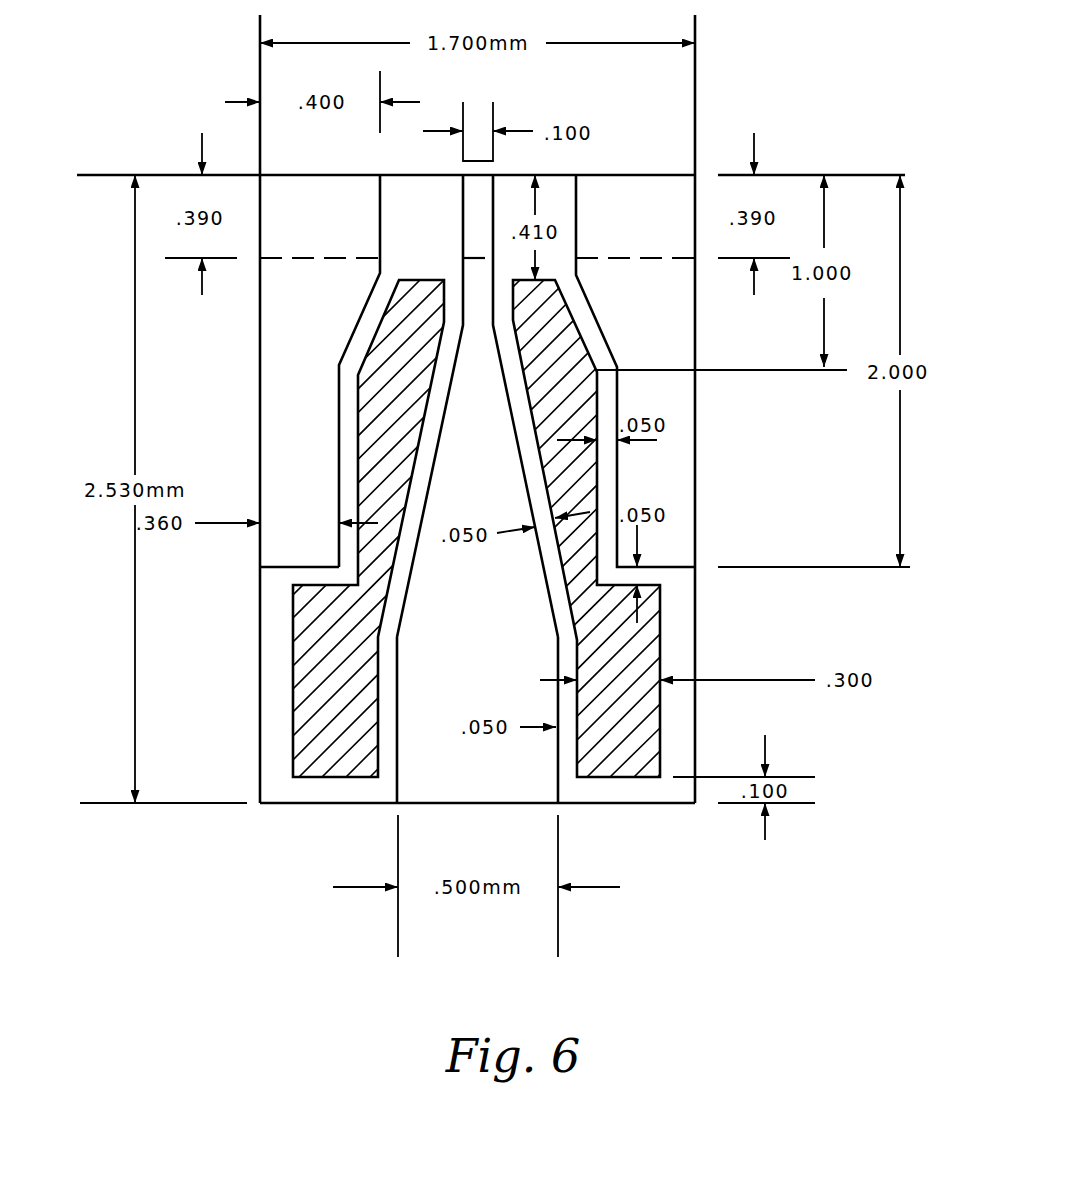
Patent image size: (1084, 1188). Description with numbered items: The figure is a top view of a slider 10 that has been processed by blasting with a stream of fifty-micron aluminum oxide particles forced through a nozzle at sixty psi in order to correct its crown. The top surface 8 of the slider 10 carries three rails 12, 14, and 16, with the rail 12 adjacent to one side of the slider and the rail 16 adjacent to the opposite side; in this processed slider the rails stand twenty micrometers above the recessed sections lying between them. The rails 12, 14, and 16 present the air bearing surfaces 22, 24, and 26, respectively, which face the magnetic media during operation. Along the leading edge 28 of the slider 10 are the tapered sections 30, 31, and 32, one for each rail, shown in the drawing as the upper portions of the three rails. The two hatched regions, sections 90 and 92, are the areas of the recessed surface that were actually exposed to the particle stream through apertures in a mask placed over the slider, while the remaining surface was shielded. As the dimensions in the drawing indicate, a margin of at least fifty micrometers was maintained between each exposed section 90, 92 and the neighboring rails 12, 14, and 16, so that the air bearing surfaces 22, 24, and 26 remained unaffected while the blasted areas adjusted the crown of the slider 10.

The top surface 8 is at (680, 640).
The slider 10 is at (141, 898).
The rail 12 is at (260, 392).
The rail 14 is at (558, 787).
The rail 16 is at (697, 483).
The air bearing surface 22 is at (284, 424).
The air bearing surface 24 is at (462, 633).
The air bearing surface 26 is at (627, 325).
The leading edge 28 is at (562, 171).
The tapered section 30 is at (306, 230).
The tapered section 31 is at (463, 229).
The tapered section 32 is at (619, 230).
The exposed section 90 is at (628, 760).
The exposed section 92 is at (312, 778).